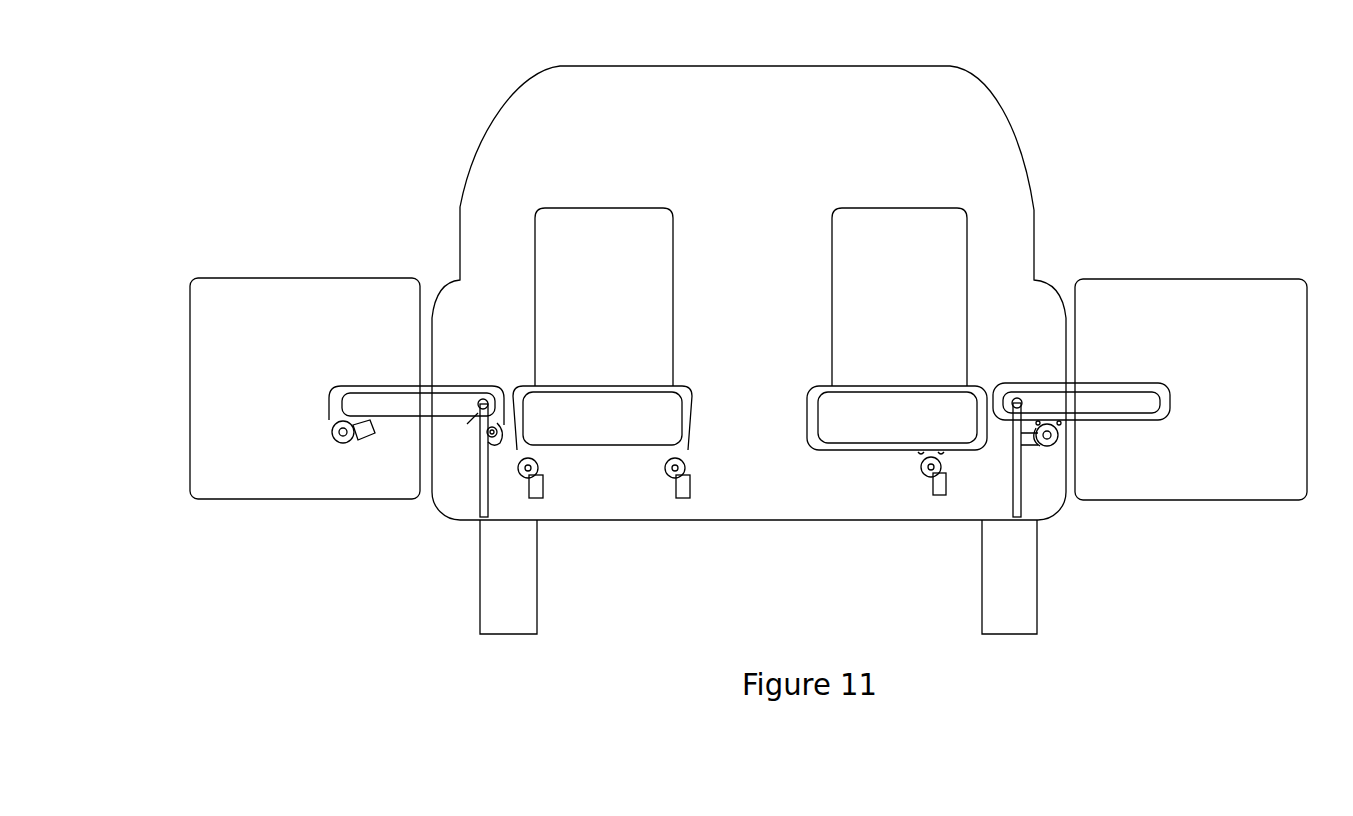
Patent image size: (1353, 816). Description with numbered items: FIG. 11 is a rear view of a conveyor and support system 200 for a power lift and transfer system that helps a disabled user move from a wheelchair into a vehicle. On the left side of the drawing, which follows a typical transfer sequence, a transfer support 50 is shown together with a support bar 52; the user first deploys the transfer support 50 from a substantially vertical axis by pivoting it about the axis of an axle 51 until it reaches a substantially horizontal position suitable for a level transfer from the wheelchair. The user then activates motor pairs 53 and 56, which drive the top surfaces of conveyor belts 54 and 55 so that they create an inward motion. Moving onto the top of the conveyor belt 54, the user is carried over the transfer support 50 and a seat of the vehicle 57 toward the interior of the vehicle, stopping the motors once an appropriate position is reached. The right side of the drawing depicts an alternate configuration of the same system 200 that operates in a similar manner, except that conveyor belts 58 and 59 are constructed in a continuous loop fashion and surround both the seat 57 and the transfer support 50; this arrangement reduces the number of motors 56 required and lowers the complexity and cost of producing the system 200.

The conveyor and support system 200 is at (391, 250).
The transfer support 50 is at (373, 407).
The axle 51 is at (483, 412).
The support bar 52 is at (481, 470).
The motor pair 53 is at (343, 438).
The conveyor belt 54 is at (340, 385).
The conveyor belt 55 is at (525, 388).
The motor pair 56 is at (541, 478).
The seat of the vehicle 57 is at (881, 426).
The conveyor belt 58 is at (980, 386).
The conveyor belt 59 is at (1150, 387).